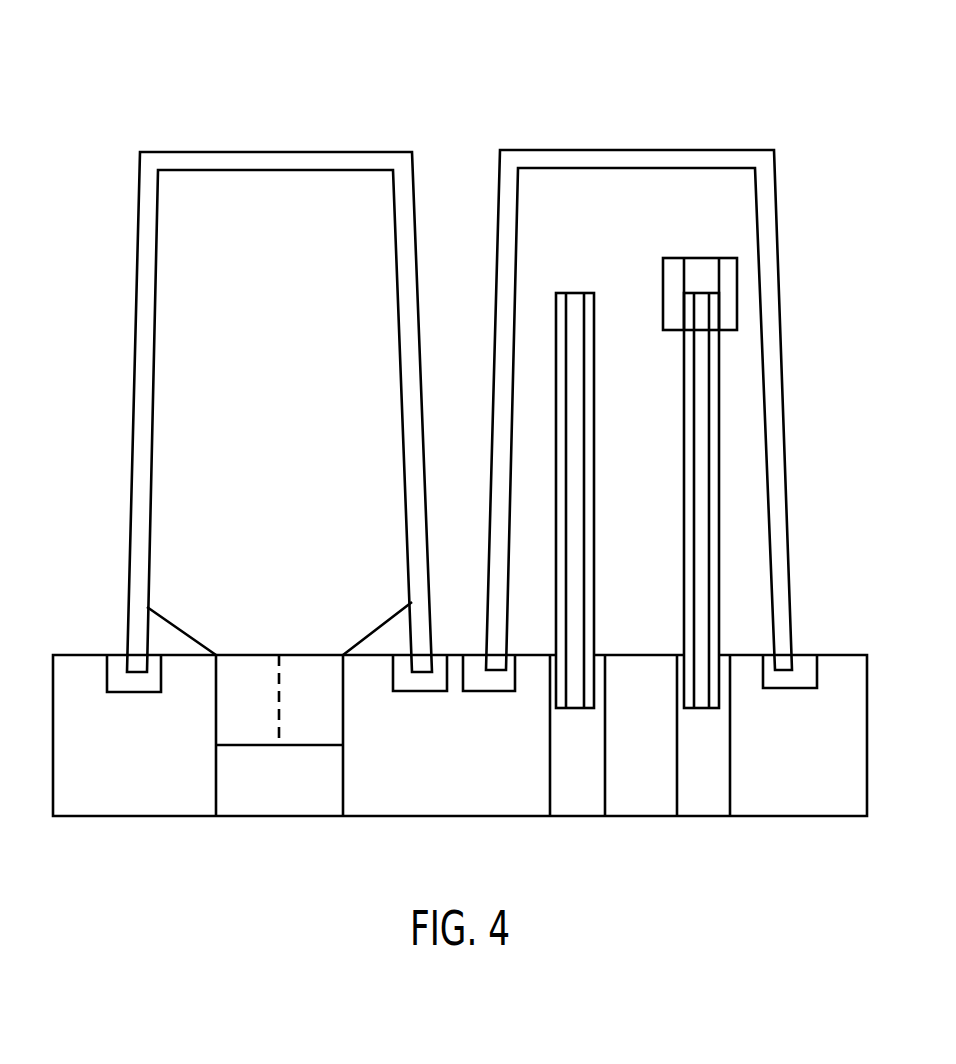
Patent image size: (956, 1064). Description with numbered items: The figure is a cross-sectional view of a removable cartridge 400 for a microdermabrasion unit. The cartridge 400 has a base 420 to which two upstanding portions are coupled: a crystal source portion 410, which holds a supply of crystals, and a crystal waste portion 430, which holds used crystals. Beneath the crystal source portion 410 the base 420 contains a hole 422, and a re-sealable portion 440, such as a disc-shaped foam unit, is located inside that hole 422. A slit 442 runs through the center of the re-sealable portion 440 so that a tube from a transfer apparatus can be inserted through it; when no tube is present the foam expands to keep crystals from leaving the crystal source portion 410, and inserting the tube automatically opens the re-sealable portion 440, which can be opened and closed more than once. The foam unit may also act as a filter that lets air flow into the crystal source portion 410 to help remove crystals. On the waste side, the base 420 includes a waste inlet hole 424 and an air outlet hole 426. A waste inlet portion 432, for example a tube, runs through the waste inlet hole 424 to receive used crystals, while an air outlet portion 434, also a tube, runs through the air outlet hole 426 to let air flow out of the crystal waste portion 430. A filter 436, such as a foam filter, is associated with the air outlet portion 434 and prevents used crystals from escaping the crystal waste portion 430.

The removable cartridge 400 is at (702, 32).
The crystal source portion 410 is at (235, 152).
The base 420 is at (137, 818).
The hole 422 is at (217, 802).
The waste inlet hole 424 is at (550, 802).
The air outlet hole 426 is at (730, 802).
The crystal waste portion 430 is at (587, 150).
The waste inlet portion 432 is at (594, 596).
The air outlet portion 434 is at (684, 512).
The filter 436 is at (678, 258).
The re-sealable portion 440 is at (305, 655).
The slit 442 is at (281, 697).